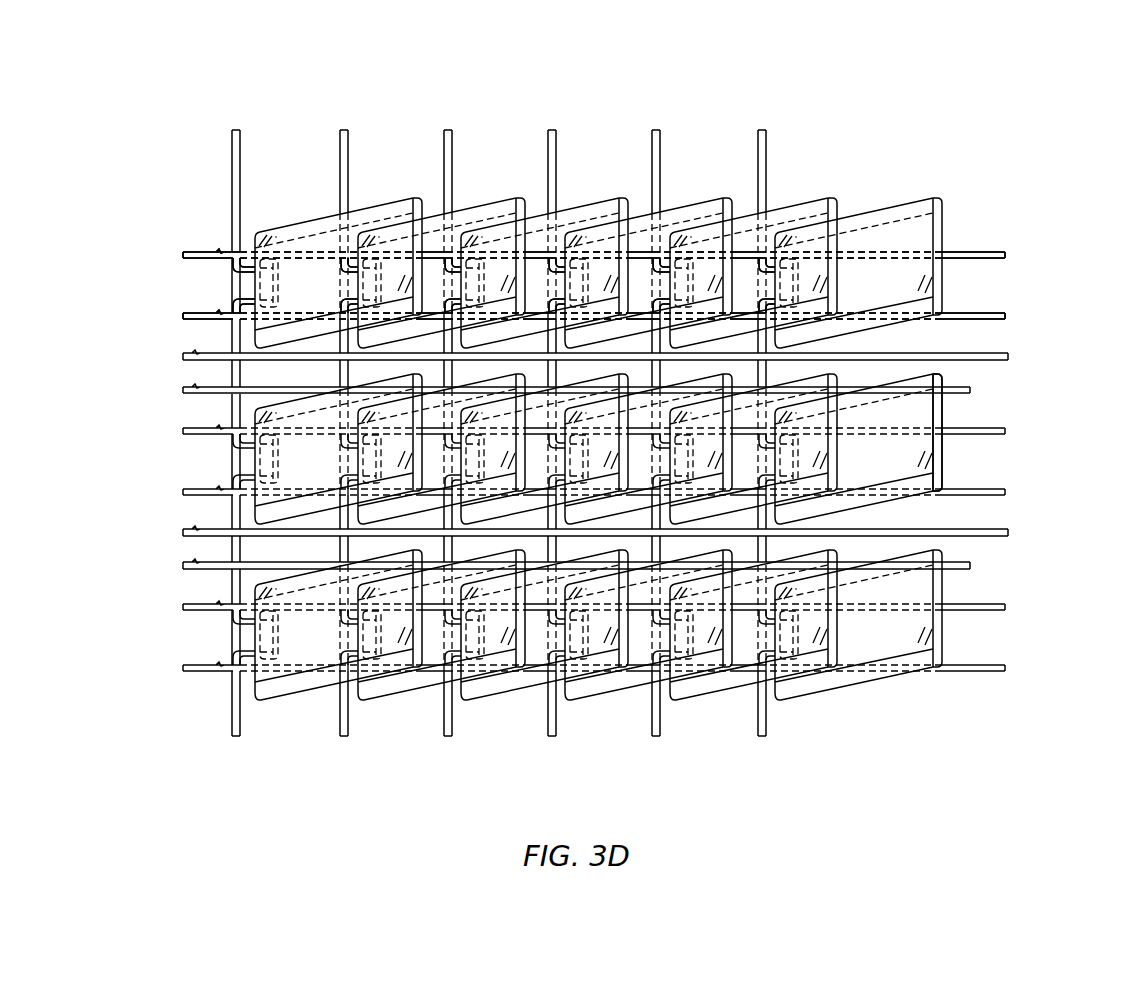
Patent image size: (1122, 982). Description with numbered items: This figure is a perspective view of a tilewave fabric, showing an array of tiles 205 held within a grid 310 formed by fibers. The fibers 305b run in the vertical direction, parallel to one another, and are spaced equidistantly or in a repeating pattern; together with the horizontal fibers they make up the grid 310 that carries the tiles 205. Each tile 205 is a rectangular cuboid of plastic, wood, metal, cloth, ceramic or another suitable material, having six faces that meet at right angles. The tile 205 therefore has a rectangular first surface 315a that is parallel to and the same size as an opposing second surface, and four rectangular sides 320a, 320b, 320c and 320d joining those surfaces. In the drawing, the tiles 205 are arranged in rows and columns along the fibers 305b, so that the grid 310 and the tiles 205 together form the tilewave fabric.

The tile 205 is at (534, 249).
The fibers 305b is at (335, 128).
The grid 310 is at (591, 431).
The first surface 315a is at (937, 418).
The side 320a is at (245, 462).
The side 320b is at (300, 695).
The side 320c is at (954, 601).
The side 320d is at (692, 215).